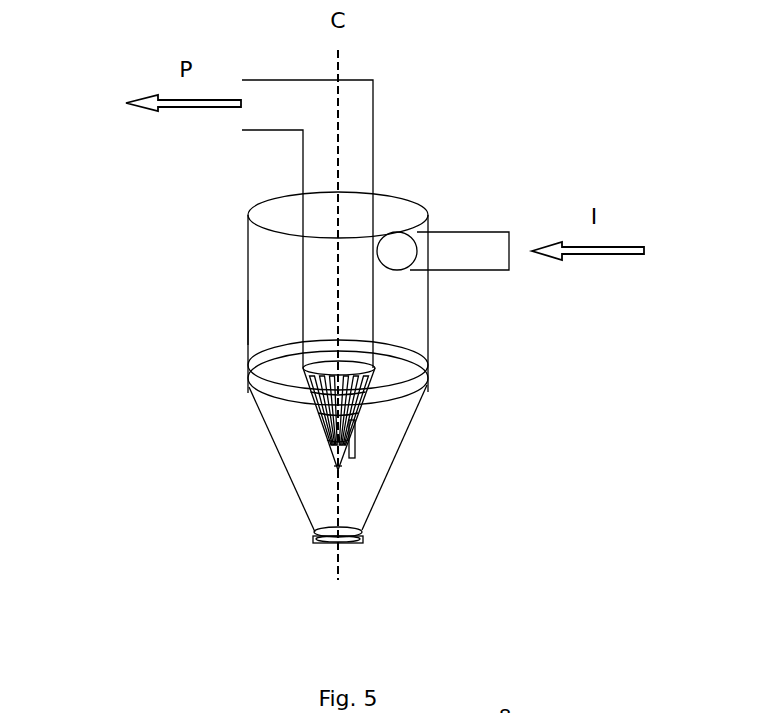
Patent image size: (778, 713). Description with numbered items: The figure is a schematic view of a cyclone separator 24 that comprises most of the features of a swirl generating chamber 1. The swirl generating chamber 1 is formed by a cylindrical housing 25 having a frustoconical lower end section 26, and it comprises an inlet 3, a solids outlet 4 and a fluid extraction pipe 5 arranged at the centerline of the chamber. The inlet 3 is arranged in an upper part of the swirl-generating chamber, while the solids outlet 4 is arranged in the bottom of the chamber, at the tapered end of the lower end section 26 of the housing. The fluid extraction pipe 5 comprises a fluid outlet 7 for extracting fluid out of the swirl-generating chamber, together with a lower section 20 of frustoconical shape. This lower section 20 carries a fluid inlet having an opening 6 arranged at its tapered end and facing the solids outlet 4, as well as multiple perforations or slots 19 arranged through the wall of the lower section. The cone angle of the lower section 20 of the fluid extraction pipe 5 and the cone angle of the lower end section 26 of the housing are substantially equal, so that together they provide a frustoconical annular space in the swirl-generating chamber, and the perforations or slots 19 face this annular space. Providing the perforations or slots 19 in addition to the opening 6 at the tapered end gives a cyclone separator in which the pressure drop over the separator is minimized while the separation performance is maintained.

The swirl generating chamber 1 is at (262, 286).
The inlet 3 is at (496, 258).
The solids outlet 4 is at (333, 543).
The fluid extraction pipe 5 is at (373, 312).
The opening 6 is at (338, 473).
The fluid outlet 7 is at (338, 188).
The perforations or slots 19 is at (330, 433).
The lower section 20 is at (317, 417).
The cyclone separator 24 is at (232, 323).
The cylindrical housing 25 is at (247, 257).
The frustoconical lower end section 26 is at (398, 450).